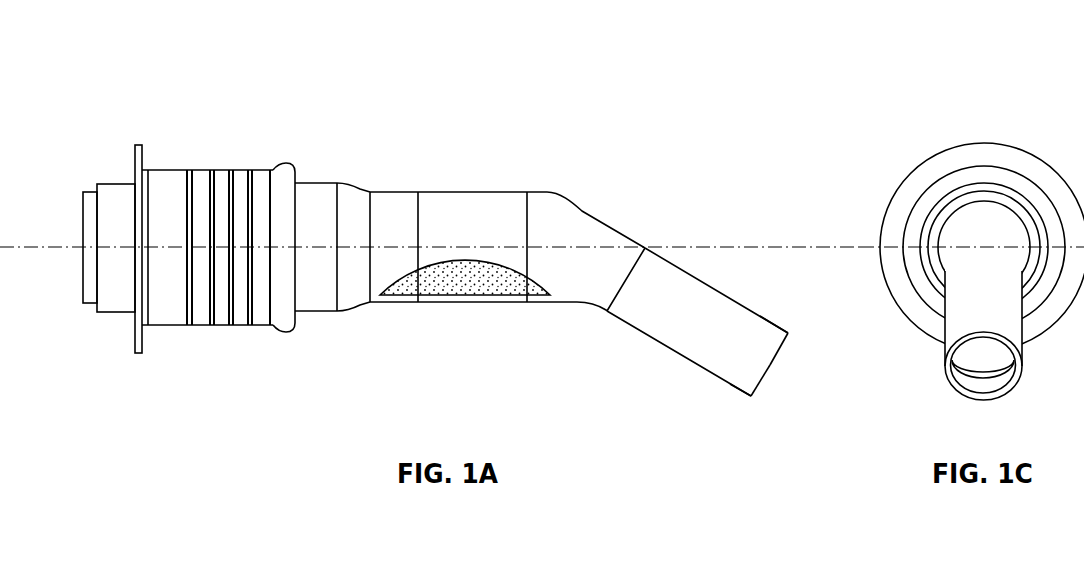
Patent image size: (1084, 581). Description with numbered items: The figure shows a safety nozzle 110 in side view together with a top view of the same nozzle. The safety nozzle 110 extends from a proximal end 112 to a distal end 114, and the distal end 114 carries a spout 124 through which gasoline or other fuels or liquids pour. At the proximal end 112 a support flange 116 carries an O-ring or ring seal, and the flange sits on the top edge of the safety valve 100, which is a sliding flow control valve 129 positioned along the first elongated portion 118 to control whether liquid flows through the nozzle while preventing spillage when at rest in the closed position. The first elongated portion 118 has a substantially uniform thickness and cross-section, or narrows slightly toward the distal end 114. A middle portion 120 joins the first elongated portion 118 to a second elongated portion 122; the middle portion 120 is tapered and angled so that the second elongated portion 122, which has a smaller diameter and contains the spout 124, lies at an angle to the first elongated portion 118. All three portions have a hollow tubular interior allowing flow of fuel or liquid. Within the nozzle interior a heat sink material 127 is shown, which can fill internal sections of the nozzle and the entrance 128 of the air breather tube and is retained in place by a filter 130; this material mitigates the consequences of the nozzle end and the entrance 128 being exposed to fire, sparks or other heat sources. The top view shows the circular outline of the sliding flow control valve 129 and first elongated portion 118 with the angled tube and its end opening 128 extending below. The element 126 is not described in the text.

In FIG. 1A, the safety valve 100 is at (223, 169).
In FIG. 1A, the safety nozzle 110 is at (506, 111).
In FIG. 1A, the proximal end 112 is at (92, 191).
In FIG. 1A, the distal end 114 is at (773, 323).
In FIG. 1A, the support flange 116 is at (140, 144).
In FIG. 1A, the first elongated portion 118 is at (442, 208).
In FIG. 1C, the first elongated portion 118 is at (978, 235).
In FIG. 1A, the middle portion 120 is at (578, 208).
In FIG. 1A, the second elongated portion 122 is at (707, 283).
In FIG. 1A, the spout 124 is at (770, 370).
In FIG. 1A, the coupling body 126 is at (110, 287).
In FIG. 1A, the heat sink material 127 is at (463, 278).
In FIG. 1A, the entrance of the air breather tube 128 is at (780, 353).
In FIG. 1C, the entrance of the air breather tube 128 is at (982, 337).
In FIG. 1C, the sliding flow control valve 129 is at (970, 168).
In FIG. 1A, the filter 130 is at (762, 383).